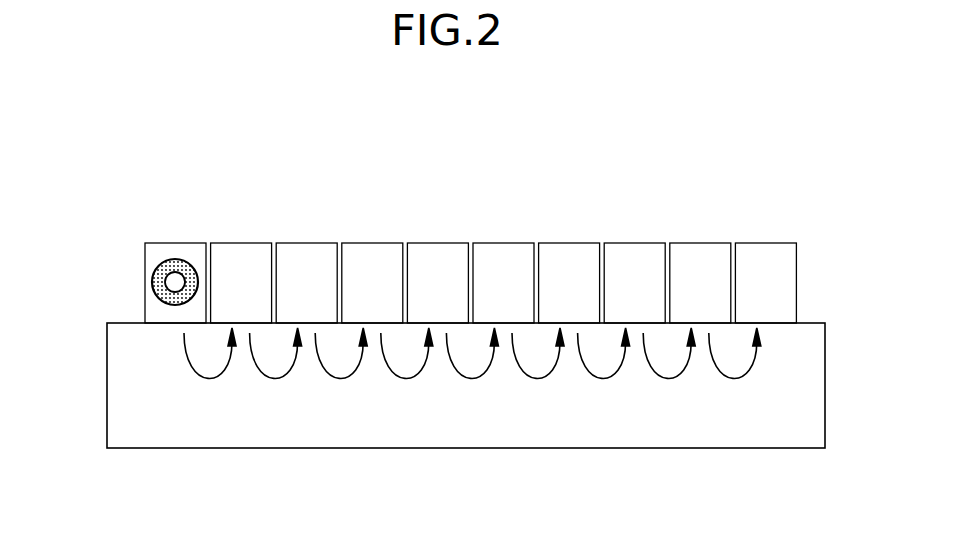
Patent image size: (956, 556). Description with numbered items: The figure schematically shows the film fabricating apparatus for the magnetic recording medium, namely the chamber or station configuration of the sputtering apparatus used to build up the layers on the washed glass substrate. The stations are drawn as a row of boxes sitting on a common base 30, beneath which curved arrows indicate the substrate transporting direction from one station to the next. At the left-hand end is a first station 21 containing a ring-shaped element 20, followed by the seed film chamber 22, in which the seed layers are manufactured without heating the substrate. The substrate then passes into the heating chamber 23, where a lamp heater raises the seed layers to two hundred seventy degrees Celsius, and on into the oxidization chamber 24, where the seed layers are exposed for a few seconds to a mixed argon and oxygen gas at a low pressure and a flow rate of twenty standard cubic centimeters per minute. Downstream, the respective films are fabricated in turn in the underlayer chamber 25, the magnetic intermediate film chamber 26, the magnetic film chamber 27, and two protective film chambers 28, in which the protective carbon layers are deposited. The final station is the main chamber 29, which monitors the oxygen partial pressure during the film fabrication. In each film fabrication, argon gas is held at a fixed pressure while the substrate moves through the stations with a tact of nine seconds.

The light source 20 is at (162, 272).
The processing unit 21 is at (207, 236).
The seed film chamber 22 is at (273, 236).
The heating chamber 23 is at (338, 236).
The oxidization chamber 24 is at (404, 236).
The underlayer chamber 25 is at (469, 236).
The magnetic intermediate film chamber 26 is at (535, 236).
The magnetic film chamber 27 is at (601, 236).
The protective film chamber 28 is at (699, 236).
The main chamber 29 is at (797, 236).
The substrate transporting stage 30 is at (756, 427).